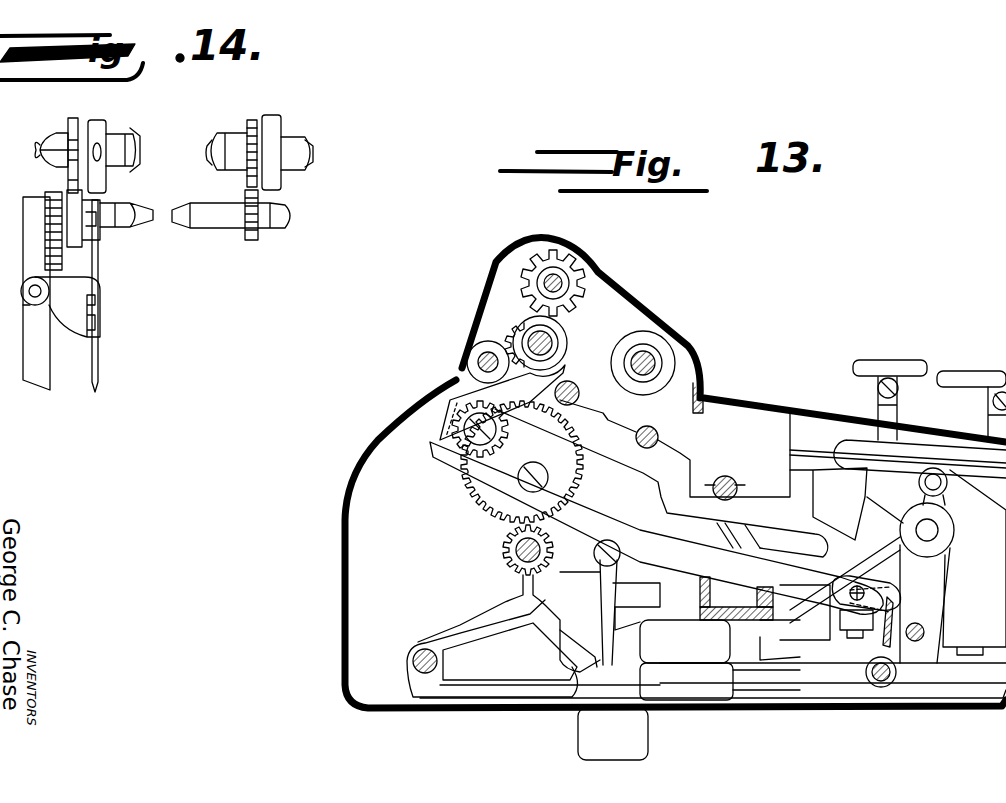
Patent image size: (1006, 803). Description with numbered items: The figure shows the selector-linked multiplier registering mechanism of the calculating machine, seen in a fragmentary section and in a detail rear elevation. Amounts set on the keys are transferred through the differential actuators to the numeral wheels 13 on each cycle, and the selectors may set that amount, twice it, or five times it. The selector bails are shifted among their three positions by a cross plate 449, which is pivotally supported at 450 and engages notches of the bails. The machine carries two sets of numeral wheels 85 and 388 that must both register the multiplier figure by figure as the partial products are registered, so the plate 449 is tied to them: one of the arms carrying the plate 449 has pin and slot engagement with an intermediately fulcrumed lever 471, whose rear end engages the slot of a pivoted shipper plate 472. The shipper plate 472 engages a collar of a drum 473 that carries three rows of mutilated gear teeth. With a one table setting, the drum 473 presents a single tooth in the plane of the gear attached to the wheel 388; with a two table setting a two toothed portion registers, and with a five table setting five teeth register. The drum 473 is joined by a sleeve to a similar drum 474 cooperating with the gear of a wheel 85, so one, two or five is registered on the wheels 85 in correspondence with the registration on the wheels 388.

In FIG. 13, the numeral wheels 13 is at (672, 352).
In FIG. 14, the numeral wheels 85 is at (283, 125).
In FIG. 14, the numeral wheels 388 is at (108, 128).
In FIG. 13, the numeral wheels 388 is at (592, 272).
In FIG. 13, the cross plate 449 is at (895, 640).
In FIG. 13, the pivot 450 is at (883, 687).
In FIG. 14, the intermediately fulcrumed lever 471 is at (97, 372).
In FIG. 13, the intermediately fulcrumed lever 471 is at (478, 473).
In FIG. 14, the shipper plate 472 is at (95, 283).
In FIG. 13, the shipper plate 472 is at (468, 400).
In FIG. 14, the drum 473 is at (76, 240).
In FIG. 13, the drum 473 is at (514, 330).
In FIG. 14, the drum 474 is at (258, 235).